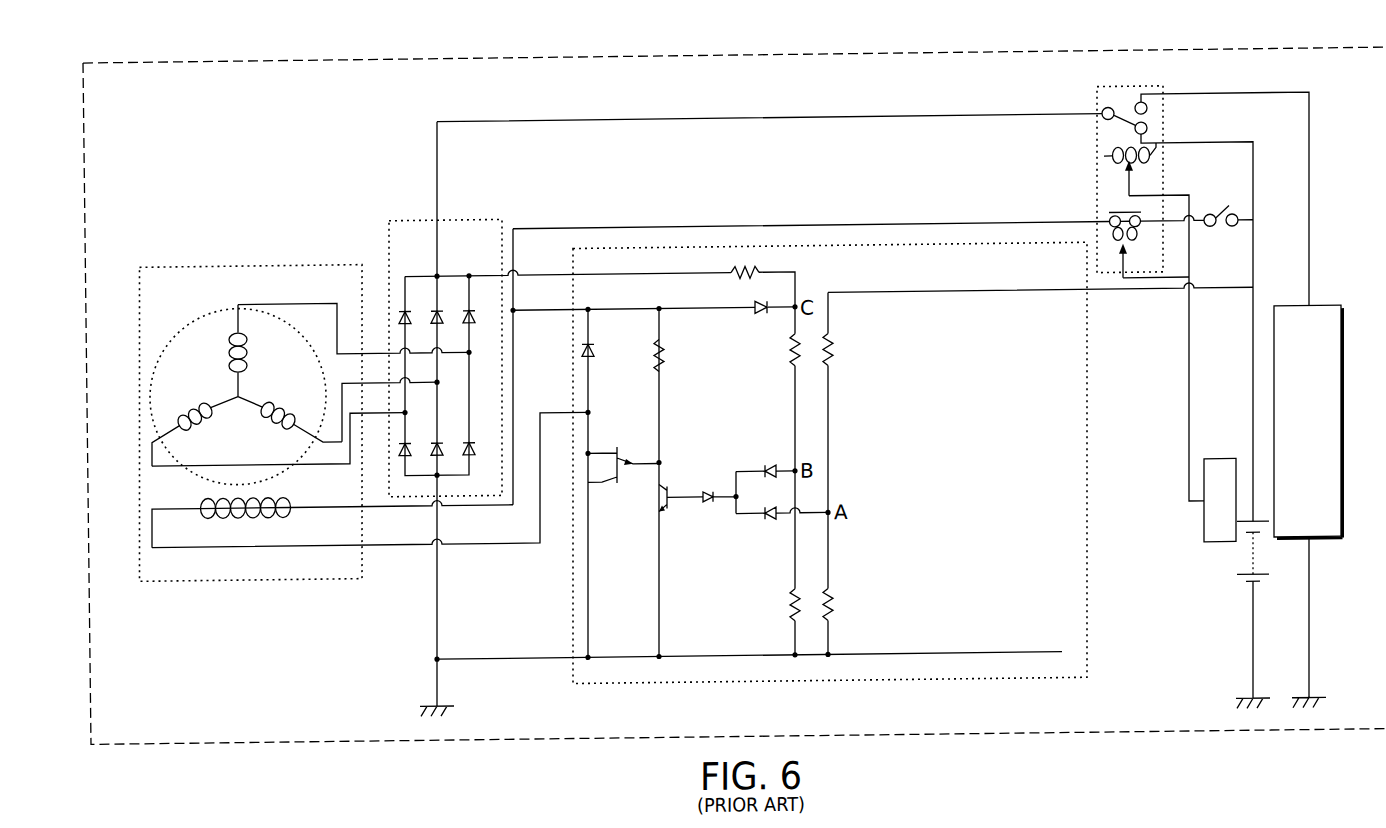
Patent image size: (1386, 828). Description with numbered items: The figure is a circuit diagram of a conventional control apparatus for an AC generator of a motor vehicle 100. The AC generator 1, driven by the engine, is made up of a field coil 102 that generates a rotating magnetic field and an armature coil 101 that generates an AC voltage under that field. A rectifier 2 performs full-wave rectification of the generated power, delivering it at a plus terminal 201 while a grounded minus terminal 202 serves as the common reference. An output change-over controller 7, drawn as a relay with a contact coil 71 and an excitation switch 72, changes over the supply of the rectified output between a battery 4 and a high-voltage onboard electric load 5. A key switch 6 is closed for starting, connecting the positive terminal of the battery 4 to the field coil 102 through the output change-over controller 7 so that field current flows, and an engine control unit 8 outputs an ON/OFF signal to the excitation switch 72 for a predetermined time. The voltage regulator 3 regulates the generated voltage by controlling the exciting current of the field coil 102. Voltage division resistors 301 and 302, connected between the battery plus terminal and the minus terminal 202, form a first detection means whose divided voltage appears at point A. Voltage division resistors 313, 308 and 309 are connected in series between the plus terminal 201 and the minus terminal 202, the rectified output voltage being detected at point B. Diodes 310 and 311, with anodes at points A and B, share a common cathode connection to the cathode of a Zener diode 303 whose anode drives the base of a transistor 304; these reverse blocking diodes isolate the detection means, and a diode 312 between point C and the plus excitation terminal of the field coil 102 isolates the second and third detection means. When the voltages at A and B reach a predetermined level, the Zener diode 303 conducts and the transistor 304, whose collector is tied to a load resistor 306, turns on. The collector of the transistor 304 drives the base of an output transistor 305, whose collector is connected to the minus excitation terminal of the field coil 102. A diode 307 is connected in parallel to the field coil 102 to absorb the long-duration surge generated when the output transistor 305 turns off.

The motor vehicle 100 is at (213, 57).
The AC generator 1 is at (231, 256).
The armature coil 101 is at (177, 323).
The field coil 102 is at (290, 508).
The rectifier 2 is at (471, 215).
The plus terminal 201 is at (436, 272).
The minus terminal 202 is at (440, 474).
The voltage regulator 3 is at (755, 247).
The voltage division resistor 301 is at (832, 346).
The voltage division resistor 302 is at (832, 603).
The Zener diode 303 is at (705, 508).
The transistor 304 is at (663, 499).
The output transistor 305 is at (593, 451).
The load resistor 306 is at (662, 358).
The diode 307 is at (594, 346).
The voltage division resistor 308 is at (790, 353).
The voltage division resistor 309 is at (790, 600).
The diode 310 is at (767, 465).
The diode 311 is at (768, 519).
The diode 312 is at (752, 315).
The voltage division resistor 313 is at (735, 279).
The battery 4 is at (1247, 558).
The high-voltage onboard electric load 5 is at (1328, 548).
The key switch 6 is at (1222, 213).
The output change-over controller 7 is at (1098, 108).
The relay coil 71 is at (1135, 171).
The excitation switch 72 is at (1128, 247).
The engine control unit 8 is at (1222, 464).